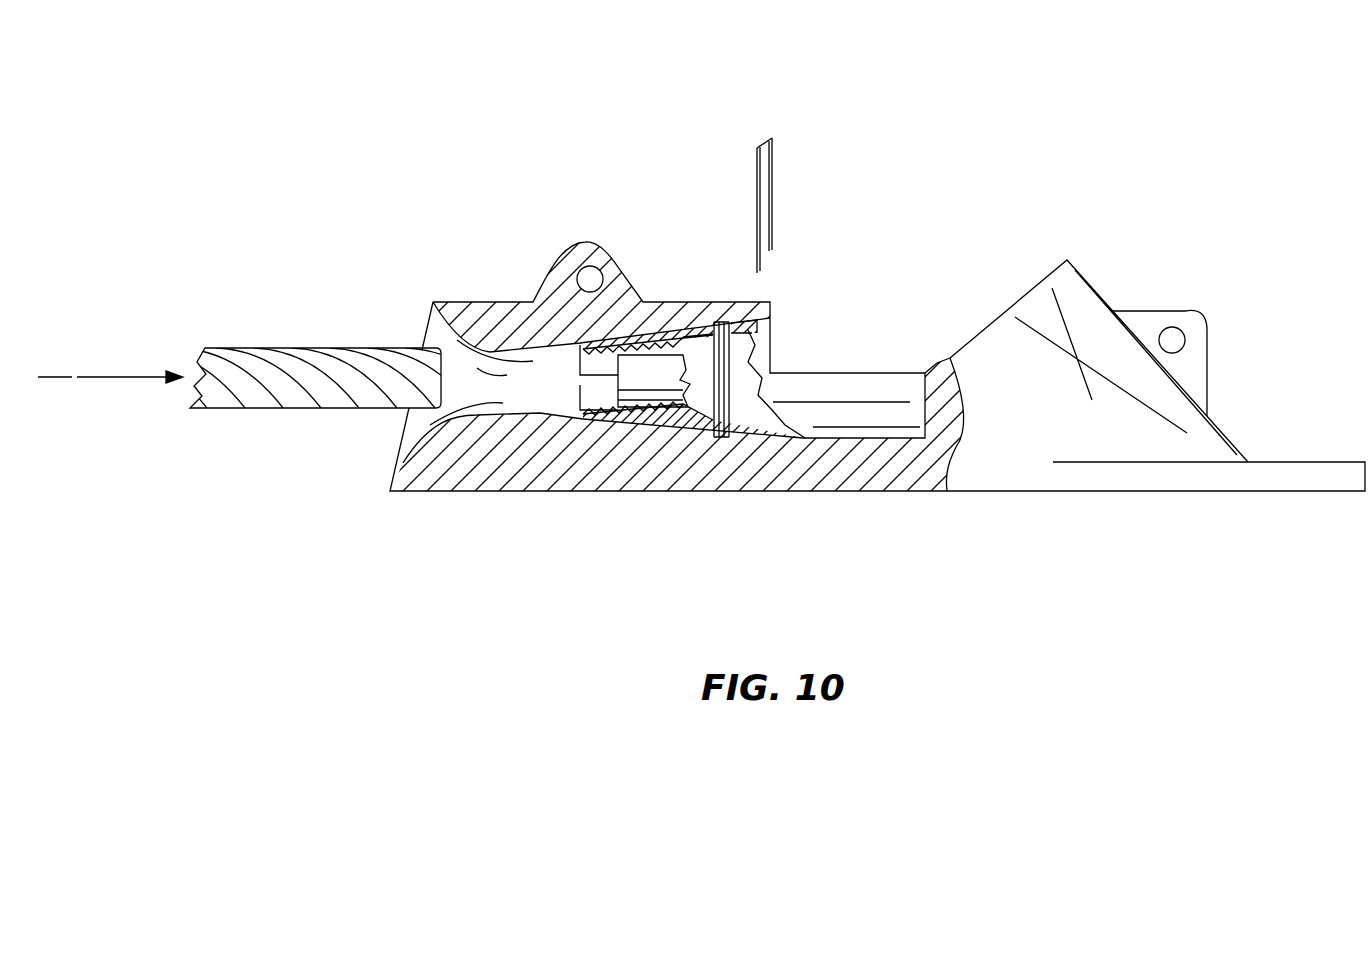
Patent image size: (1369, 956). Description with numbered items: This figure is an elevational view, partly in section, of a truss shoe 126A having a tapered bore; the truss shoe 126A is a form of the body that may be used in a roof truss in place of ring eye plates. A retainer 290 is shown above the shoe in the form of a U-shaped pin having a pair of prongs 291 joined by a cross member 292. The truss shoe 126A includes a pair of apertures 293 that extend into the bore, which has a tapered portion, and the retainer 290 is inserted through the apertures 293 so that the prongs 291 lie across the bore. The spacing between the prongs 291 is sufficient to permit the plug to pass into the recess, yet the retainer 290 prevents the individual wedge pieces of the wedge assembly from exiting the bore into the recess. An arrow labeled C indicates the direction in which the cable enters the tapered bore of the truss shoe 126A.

The truss shoe 126A is at (488, 493).
The retainer 290 is at (773, 150).
The prongs 291 is at (757, 201).
The cross member 292 is at (763, 142).
The apertures 293 is at (775, 290).
The insertion direction C is at (58, 378).